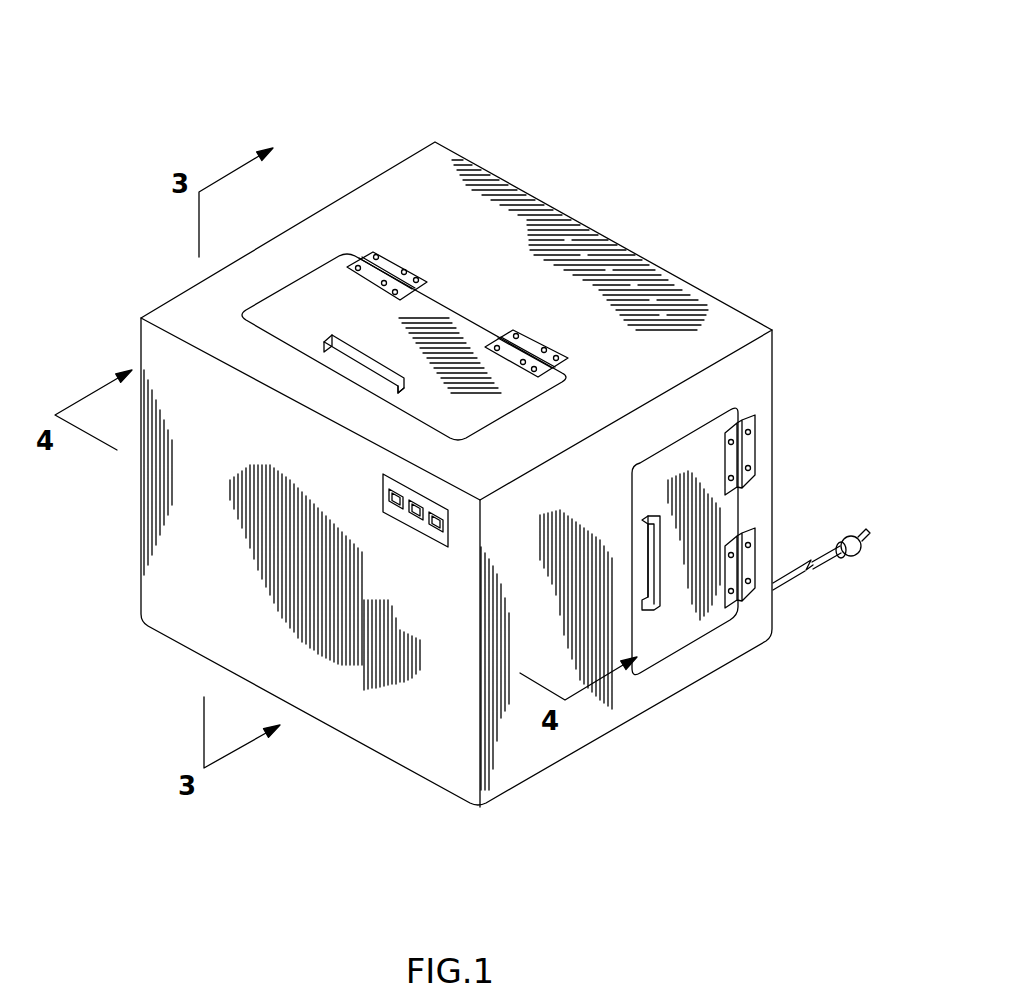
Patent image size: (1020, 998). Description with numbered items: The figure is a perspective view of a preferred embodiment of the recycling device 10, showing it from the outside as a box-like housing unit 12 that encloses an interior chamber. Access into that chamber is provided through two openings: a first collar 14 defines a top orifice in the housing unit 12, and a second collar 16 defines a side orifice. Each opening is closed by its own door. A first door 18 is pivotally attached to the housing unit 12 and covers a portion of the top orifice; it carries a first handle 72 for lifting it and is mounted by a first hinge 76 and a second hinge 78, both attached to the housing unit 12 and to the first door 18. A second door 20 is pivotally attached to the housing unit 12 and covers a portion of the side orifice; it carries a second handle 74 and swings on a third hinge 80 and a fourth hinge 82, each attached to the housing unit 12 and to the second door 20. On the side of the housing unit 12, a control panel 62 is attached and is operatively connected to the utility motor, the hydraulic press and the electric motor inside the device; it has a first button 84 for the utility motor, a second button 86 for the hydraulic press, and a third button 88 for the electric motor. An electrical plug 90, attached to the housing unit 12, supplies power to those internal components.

The recycling device 10 is at (228, 78).
The housing unit 12 is at (703, 335).
The first collar 14 is at (443, 303).
The second collar 16 is at (665, 660).
The first door 18 is at (428, 343).
The second door 20 is at (690, 593).
The control panel 62 is at (383, 476).
The first handle 72 is at (335, 347).
The second handle 74 is at (657, 553).
The first hinge 76 is at (380, 253).
The second hinge 78 is at (523, 342).
The third hinge 80 is at (752, 437).
The fourth hinge 82 is at (752, 549).
The first button 84 is at (389, 512).
The second button 86 is at (408, 517).
The third button 88 is at (433, 527).
The electrical plug 90 is at (858, 556).